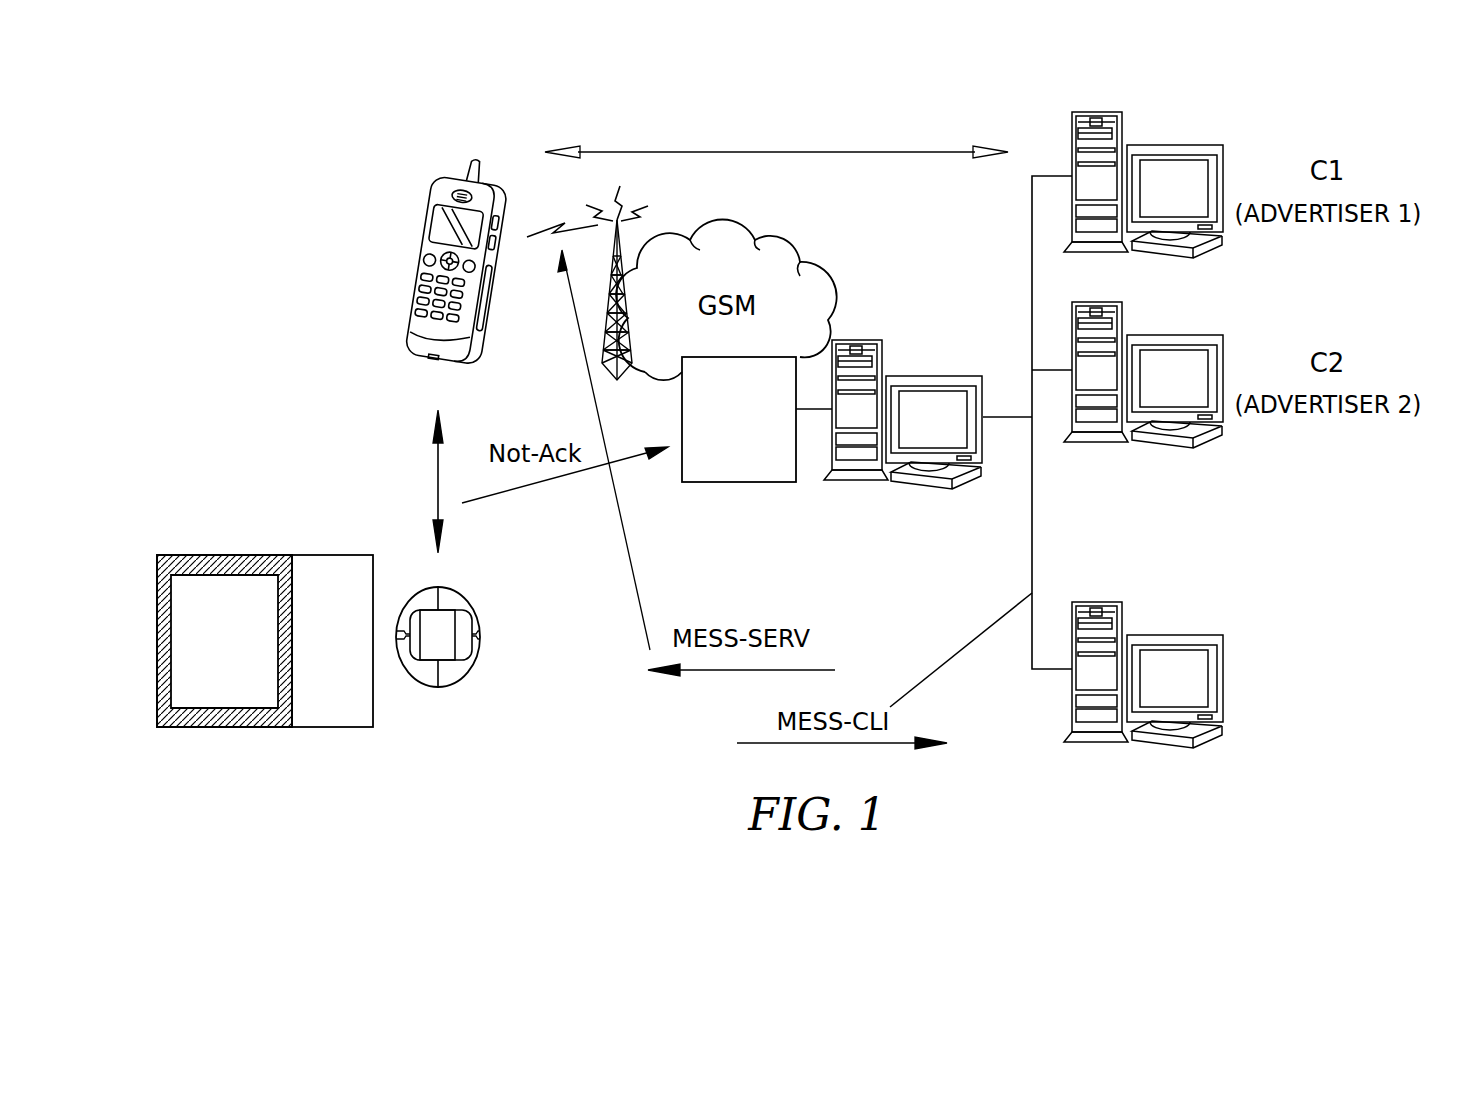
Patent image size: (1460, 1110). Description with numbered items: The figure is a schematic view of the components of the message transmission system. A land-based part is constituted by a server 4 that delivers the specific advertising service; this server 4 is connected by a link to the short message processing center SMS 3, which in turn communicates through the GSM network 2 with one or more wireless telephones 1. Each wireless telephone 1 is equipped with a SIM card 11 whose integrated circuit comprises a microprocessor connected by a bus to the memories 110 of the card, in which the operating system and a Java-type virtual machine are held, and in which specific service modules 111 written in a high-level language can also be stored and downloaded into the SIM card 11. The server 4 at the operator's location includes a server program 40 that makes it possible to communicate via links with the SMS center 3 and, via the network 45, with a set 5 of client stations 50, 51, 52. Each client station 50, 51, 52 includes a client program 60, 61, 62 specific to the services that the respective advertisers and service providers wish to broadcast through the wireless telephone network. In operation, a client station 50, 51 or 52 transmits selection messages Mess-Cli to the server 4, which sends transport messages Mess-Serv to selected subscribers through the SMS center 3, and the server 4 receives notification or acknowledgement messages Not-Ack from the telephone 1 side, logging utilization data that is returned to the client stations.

The wireless telephone 1 is at (433, 262).
The GSM network 2 is at (785, 152).
The short message processing center SMS 3 is at (740, 482).
The server 4 is at (858, 338).
The set of client stations 5 is at (1243, 690).
The SIM card 11 is at (478, 612).
The server program 40 is at (938, 376).
The network 45 is at (1032, 226).
The client station 50 is at (1123, 117).
The client station 51 is at (1123, 307).
The client station 52 is at (1123, 607).
The client program 60 is at (1187, 145).
The client program 61 is at (1187, 335).
The client program 62 is at (1187, 635).
The memories 110 is at (331, 566).
The specific service module 111 is at (213, 555).